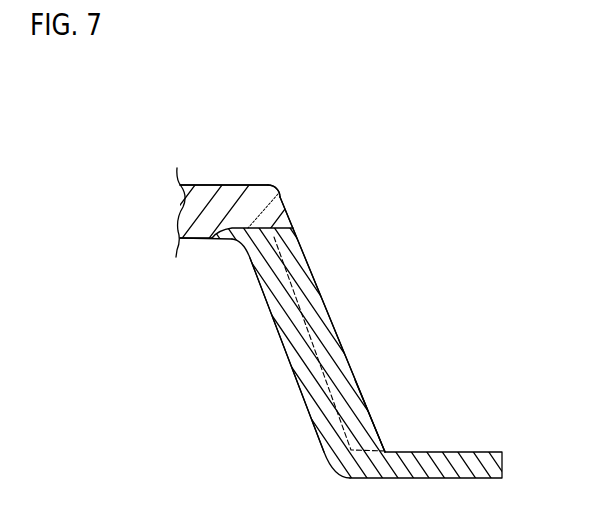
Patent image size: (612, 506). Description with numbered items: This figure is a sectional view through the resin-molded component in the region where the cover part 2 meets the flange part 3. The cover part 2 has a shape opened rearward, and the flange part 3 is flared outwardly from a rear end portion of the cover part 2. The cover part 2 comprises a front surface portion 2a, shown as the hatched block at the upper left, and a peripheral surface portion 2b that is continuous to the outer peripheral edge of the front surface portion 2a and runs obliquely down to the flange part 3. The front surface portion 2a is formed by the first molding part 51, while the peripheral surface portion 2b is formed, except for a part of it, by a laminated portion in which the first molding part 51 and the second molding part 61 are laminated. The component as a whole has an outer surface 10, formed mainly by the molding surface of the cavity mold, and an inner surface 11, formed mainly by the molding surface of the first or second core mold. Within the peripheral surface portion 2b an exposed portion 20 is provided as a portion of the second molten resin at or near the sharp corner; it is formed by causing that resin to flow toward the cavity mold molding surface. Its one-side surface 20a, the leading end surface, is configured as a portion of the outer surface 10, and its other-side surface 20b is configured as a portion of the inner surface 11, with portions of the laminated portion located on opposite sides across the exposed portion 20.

The cover part 2 is at (233, 187).
The front surface portion 2a is at (212, 185).
The peripheral surface portion 2b is at (303, 269).
The flange part 3 is at (503, 463).
The outer surface 10 is at (248, 185).
The inner surface 11 is at (192, 240).
The exposed portion 20 is at (323, 303).
The one-side surface 20a is at (353, 372).
The other-side surface 20b is at (290, 365).
The first molding part 51 is at (283, 197).
The second molding part 61 is at (364, 400).